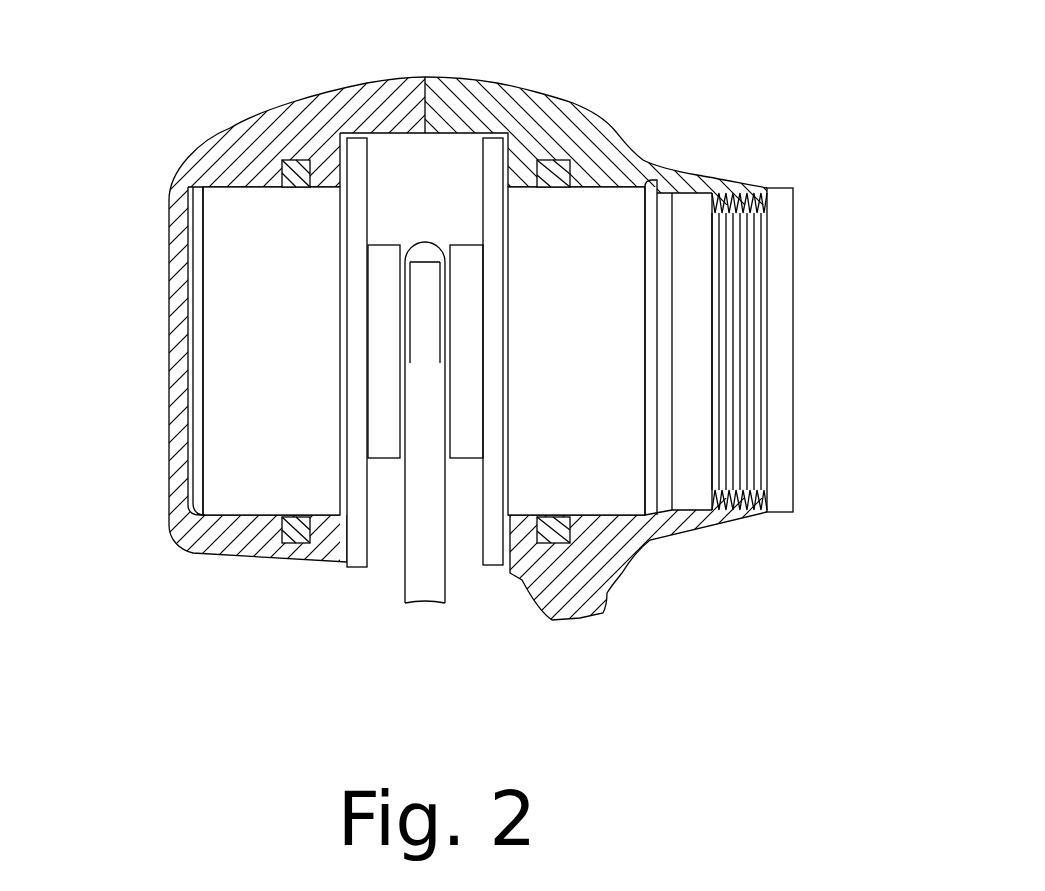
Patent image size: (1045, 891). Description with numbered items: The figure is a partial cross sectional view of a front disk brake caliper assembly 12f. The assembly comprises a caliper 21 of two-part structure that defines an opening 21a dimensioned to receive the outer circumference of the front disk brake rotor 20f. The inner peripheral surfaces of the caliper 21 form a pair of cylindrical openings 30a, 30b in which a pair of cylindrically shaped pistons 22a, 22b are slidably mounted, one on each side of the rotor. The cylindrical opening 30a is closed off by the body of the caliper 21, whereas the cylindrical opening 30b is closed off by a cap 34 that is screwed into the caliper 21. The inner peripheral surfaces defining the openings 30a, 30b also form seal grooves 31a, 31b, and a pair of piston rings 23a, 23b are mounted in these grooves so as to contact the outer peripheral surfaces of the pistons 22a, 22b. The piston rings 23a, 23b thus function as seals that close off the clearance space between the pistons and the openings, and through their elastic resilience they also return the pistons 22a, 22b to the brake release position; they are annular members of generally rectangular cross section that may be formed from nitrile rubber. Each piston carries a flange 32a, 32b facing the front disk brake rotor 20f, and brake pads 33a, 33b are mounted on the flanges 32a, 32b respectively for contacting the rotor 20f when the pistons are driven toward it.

The front disk brake caliper assembly 12f is at (693, 137).
The caliper 21 is at (630, 152).
The opening 21a is at (340, 168).
The piston 22a is at (262, 322).
The piston 22b is at (605, 312).
The piston ring 23a is at (280, 157).
The piston ring 23b is at (545, 157).
The cylindrical opening 30a is at (260, 512).
The cylindrical opening 30b is at (605, 523).
The seal groove 31a is at (283, 528).
The seal groove 31b is at (562, 520).
The flange 32a is at (358, 552).
The flange 32b is at (490, 543).
The brake pad 33a is at (378, 257).
The brake pad 33b is at (470, 268).
The front disk brake rotor 20f is at (422, 567).
The cap 34 is at (782, 258).